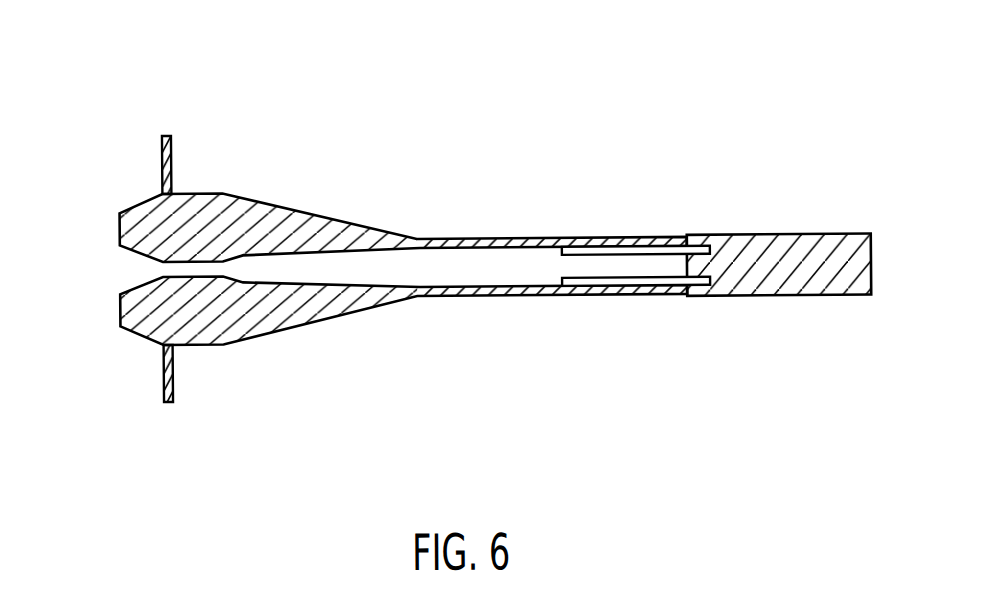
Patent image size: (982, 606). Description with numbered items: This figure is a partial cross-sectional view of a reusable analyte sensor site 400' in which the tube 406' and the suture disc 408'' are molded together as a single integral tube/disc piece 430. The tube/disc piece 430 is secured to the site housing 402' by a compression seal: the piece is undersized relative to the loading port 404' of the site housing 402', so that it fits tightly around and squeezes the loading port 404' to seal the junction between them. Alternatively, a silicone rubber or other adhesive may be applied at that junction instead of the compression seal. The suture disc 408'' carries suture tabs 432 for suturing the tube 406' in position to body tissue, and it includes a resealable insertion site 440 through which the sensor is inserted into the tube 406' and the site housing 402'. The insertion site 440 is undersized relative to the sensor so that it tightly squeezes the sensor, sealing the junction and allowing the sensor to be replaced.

The sensor site 400' is at (438, 303).
The site housing 402' is at (780, 309).
The loading port 404' is at (635, 242).
The tube 406' is at (547, 190).
The suture disc 408'' is at (345, 303).
The tube/disc piece 430 is at (675, 428).
The suture tabs 432 is at (172, 162).
The insertion site 440 is at (112, 245).